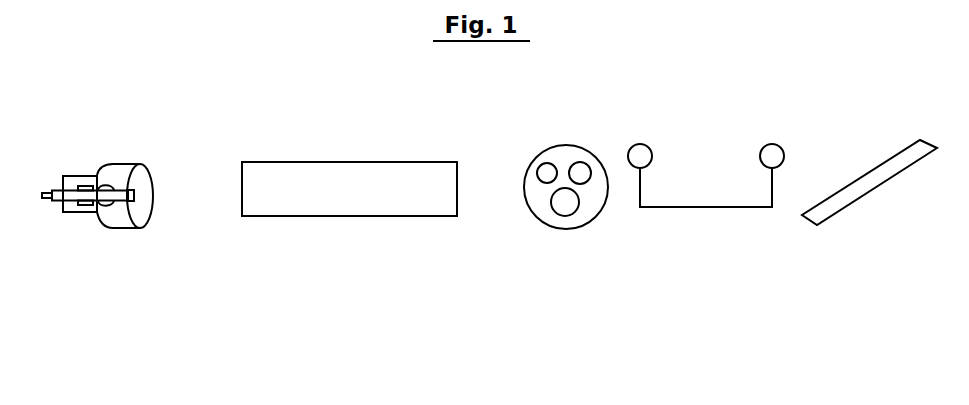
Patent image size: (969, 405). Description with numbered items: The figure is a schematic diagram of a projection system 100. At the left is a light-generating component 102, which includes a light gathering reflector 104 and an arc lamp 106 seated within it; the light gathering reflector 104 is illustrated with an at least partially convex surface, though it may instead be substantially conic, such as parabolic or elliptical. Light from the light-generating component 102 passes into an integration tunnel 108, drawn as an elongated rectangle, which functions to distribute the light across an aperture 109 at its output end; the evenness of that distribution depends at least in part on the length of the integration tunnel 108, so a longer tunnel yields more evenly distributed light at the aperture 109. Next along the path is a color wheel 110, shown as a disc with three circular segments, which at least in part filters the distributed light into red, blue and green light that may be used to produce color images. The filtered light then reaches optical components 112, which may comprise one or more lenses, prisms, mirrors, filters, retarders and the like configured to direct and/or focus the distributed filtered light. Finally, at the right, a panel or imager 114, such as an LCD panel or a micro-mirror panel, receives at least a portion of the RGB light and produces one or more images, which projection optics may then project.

The projection system 100 is at (271, 298).
The light-generating component 102 is at (112, 238).
The light gathering reflector 104 is at (142, 153).
The arc lamp 106 is at (146, 188).
The integration tunnel 108 is at (345, 152).
The aperture 109 is at (480, 165).
The color wheel 110 is at (565, 135).
The optical components 112 is at (706, 207).
The imager 114 is at (883, 198).